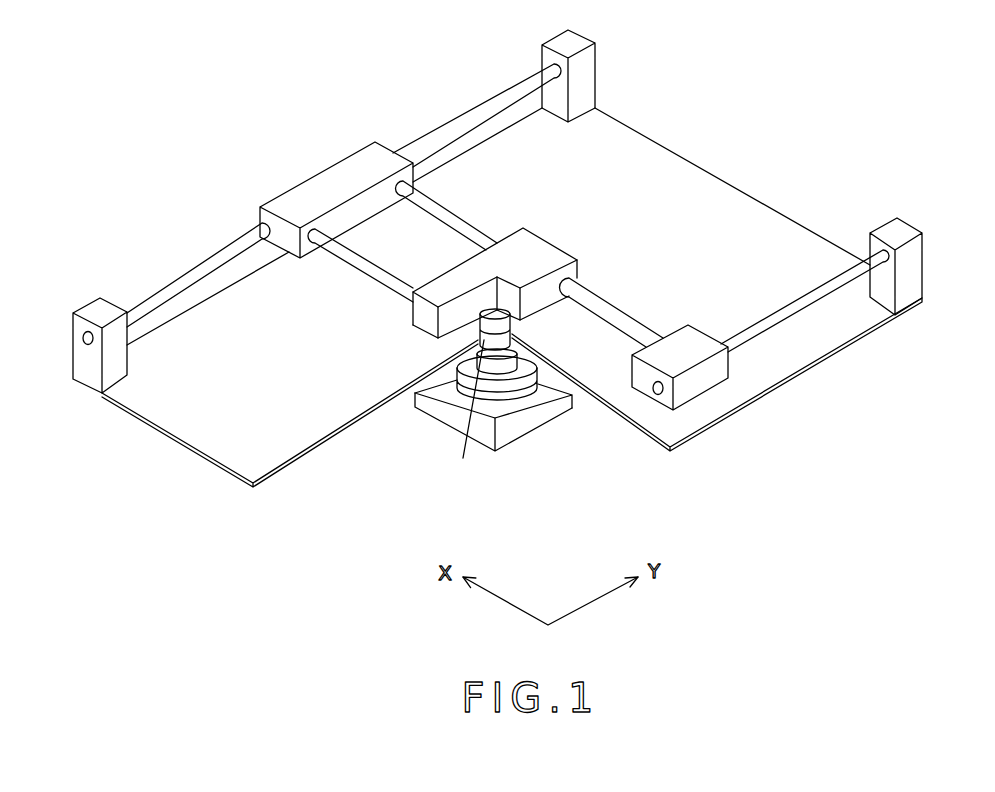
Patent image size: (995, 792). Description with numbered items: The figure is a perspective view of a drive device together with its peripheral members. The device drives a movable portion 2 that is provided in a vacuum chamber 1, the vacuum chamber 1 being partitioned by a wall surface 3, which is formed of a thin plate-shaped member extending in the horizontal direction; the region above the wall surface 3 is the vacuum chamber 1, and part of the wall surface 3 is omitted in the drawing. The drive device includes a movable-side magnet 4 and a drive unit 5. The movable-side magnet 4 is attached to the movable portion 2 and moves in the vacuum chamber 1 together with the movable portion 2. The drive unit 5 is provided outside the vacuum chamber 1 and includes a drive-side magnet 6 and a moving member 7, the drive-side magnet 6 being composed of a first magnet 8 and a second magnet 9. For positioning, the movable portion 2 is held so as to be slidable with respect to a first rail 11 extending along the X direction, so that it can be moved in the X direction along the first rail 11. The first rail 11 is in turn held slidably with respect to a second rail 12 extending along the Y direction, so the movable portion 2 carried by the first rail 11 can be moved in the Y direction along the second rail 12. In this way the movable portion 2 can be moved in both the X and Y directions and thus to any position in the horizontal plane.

The vacuum chamber 1 is at (654, 234).
The movable portion 2 is at (535, 243).
The wall surface 3 is at (198, 431).
The movable-side magnet 4 is at (510, 332).
The drive unit 5 is at (505, 444).
The drive-side magnet 6 is at (434, 426).
The moving member 7 is at (558, 400).
The first magnet 8 is at (492, 397).
The second magnet 9 is at (463, 458).
The first rail 11 is at (457, 233).
The second rail 12 is at (461, 112).